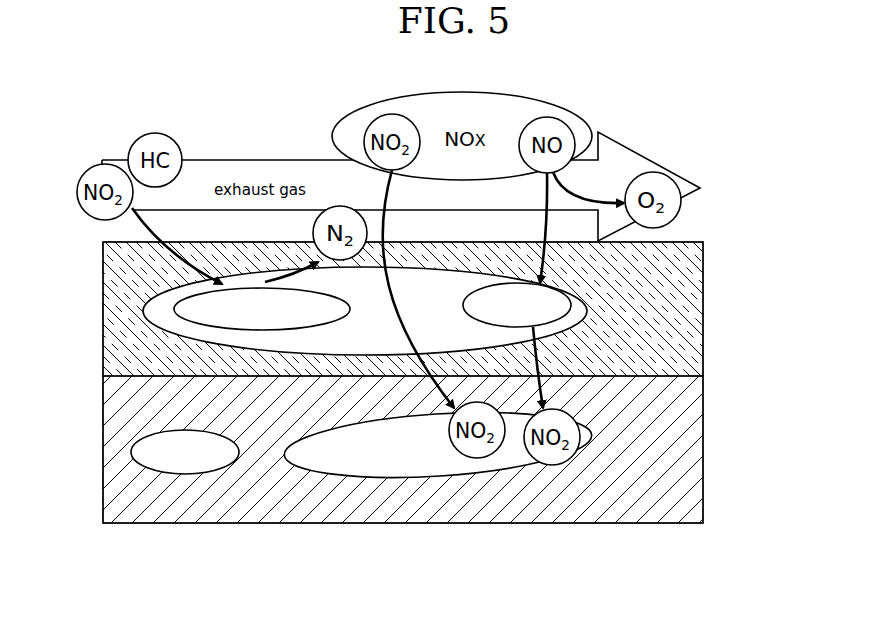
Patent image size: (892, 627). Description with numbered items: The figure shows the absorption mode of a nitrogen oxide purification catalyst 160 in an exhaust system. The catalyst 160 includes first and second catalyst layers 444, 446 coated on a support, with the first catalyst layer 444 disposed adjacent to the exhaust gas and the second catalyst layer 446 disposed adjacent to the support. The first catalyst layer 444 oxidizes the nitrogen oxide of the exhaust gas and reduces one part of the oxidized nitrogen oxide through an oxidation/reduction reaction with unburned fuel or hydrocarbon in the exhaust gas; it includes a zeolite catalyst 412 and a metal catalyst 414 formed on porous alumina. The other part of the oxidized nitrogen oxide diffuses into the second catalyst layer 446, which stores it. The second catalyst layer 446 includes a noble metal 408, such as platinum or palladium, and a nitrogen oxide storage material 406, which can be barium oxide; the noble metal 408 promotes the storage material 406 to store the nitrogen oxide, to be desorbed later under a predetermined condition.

The nitrogen oxide purification catalyst 160 is at (723, 228).
The first catalyst layer 444 is at (665, 346).
The second catalyst layer 446 is at (623, 490).
The zeolite catalyst 412 is at (174, 310).
The metal catalyst 414 is at (572, 302).
The noble metal 408 is at (131, 452).
The nitrogen oxide storage material 406 is at (460, 476).